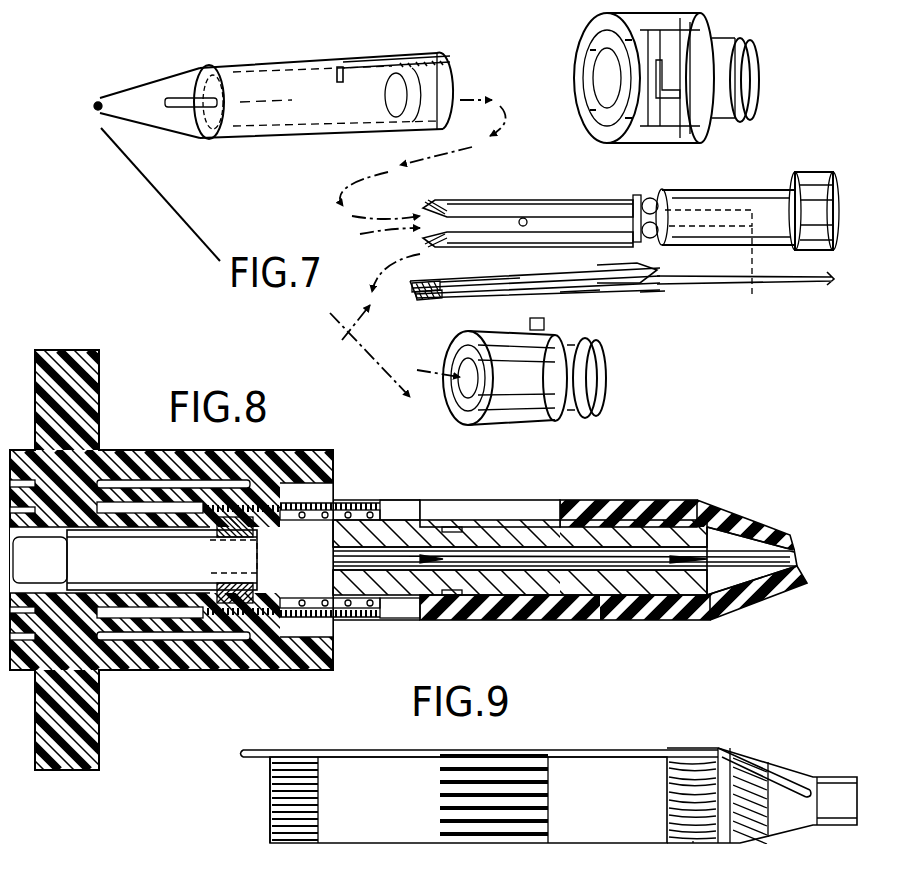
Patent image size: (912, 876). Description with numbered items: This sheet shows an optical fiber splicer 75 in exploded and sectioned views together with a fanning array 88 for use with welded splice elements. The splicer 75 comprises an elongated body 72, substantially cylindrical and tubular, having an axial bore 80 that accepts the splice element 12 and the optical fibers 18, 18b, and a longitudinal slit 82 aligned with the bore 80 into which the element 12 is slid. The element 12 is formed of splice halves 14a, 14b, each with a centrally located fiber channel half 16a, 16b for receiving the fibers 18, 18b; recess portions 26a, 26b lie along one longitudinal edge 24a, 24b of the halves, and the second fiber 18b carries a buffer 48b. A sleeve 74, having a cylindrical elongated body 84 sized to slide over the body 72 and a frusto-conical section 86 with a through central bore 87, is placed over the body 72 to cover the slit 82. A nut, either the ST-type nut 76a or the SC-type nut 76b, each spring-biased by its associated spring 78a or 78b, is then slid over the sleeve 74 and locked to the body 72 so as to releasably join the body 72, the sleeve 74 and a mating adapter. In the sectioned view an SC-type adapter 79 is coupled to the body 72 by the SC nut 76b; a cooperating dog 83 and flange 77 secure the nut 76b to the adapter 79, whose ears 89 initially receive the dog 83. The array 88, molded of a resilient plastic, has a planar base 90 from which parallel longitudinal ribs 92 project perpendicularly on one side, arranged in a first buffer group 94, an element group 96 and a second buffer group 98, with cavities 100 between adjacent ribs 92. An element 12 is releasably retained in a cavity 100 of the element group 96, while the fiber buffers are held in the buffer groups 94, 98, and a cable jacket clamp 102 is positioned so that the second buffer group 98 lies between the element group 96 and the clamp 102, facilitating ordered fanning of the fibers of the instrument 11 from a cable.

In FIG. 9, the instrument 11 is at (402, 867).
In FIG. 7, the splice element 12 is at (518, 267).
In FIG. 8, the splice element 12 is at (666, 523).
In FIG. 7, the splice half 14a is at (656, 265).
In FIG. 8, the splice half 14a is at (514, 515).
In FIG. 7, the splice half 14b is at (482, 296).
In FIG. 8, the splice half 14b is at (661, 599).
In FIG. 7, the fiber channel half 16a is at (412, 296).
In FIG. 8, the fiber channel half 16a is at (576, 548).
In FIG. 7, the fiber channel half 16b is at (432, 303).
In FIG. 8, the fiber channel half 16b is at (556, 572).
In FIG. 7, the optical fiber 18 is at (733, 287).
In FIG. 8, the optical fiber 18 is at (456, 556).
In FIG. 8, the buffered fiber 18b is at (626, 568).
In FIG. 9, the buffered fiber 18b is at (655, 748).
In FIG. 7, the longitudinal edge 24a is at (585, 290).
In FIG. 7, the longitudinal edge 24b is at (441, 280).
In FIG. 7, the recess portion 26a is at (628, 207).
In FIG. 7, the recess portion 26b is at (650, 291).
In FIG. 8, the buffer 48b is at (749, 575).
In FIG. 7, the elongated body 72 is at (582, 197).
In FIG. 8, the elongated body 72 is at (598, 623).
In FIG. 7, the sleeve 74 is at (276, 142).
In FIG. 7, the splicer 75 is at (172, 64).
In FIG. 7, the nut 76a is at (694, 140).
In FIG. 7, the nut 76b is at (501, 426).
In FIG. 8, the nut 76b is at (351, 502).
In FIG. 8, the flange 77 is at (203, 512).
In FIG. 7, the spring 78a is at (753, 50).
In FIG. 7, the spring 78b is at (610, 380).
In FIG. 8, the spring 78b is at (354, 618).
In FIG. 8, the SC-type adapter 79 is at (102, 443).
In FIG. 7, the axial bore 80 is at (754, 290).
In FIG. 7, the longitudinal slit 82 is at (524, 218).
In FIG. 8, the dog 83 is at (252, 492).
In FIG. 7, the cylindrical elongated body 84 is at (341, 60).
In FIG. 7, the frusto-conical section 86 is at (138, 58).
In FIG. 7, the through central bore 87 is at (92, 108).
In FIG. 9, the array 88 is at (630, 735).
In FIG. 7, the ears 89 is at (546, 326).
In FIG. 8, the ears 89 is at (192, 590).
In FIG. 9, the base 90 is at (623, 810).
In FIG. 9, the ribs 92 is at (324, 775).
In FIG. 9, the first buffer group 94 is at (272, 826).
In FIG. 9, the element group 96 is at (533, 845).
In FIG. 9, the second buffer group 98 is at (745, 832).
In FIG. 9, the cavities 100 is at (270, 795).
In FIG. 9, the cable jacket clamp 102 is at (832, 820).